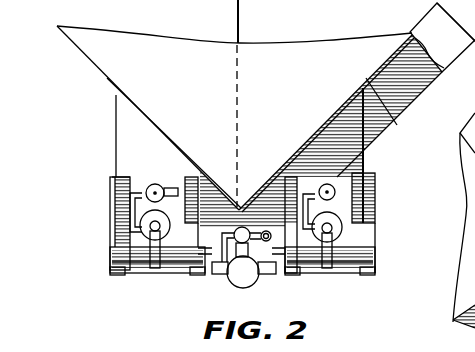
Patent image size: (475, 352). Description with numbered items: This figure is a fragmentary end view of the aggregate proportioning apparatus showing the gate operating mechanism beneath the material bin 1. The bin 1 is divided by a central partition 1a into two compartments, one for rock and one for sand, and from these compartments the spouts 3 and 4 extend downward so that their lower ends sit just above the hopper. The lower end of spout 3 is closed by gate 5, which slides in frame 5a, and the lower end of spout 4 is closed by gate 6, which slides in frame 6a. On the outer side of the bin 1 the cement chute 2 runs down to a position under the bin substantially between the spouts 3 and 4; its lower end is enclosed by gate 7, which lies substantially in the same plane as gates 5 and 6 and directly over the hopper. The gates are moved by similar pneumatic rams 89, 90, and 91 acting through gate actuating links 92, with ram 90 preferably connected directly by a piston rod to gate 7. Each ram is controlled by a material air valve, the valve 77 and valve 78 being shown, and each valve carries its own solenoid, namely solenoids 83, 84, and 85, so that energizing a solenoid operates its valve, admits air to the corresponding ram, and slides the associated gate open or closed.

The material bin 1 is at (115, 52).
The central partition 1a is at (242, 20).
The spout 4 is at (130, 142).
The cement chute 2 is at (395, 127).
The spout 3 is at (350, 170).
The solenoid 85 is at (367, 167).
The bin gate 6 is at (163, 273).
The solenoid 83 is at (112, 202).
The gate actuating link 92 is at (147, 267).
The frame 6a is at (112, 273).
The material air valve 77 is at (160, 182).
The pneumatic ram 89 is at (128, 250).
The pneumatic ram 90 is at (227, 273).
The gate 7 is at (258, 277).
The solenoid 84 is at (258, 228).
The material air valve 78 is at (241, 226).
The bin gate 5 is at (333, 286).
The frame 5a is at (367, 272).
The pneumatic ram 91 is at (340, 240).